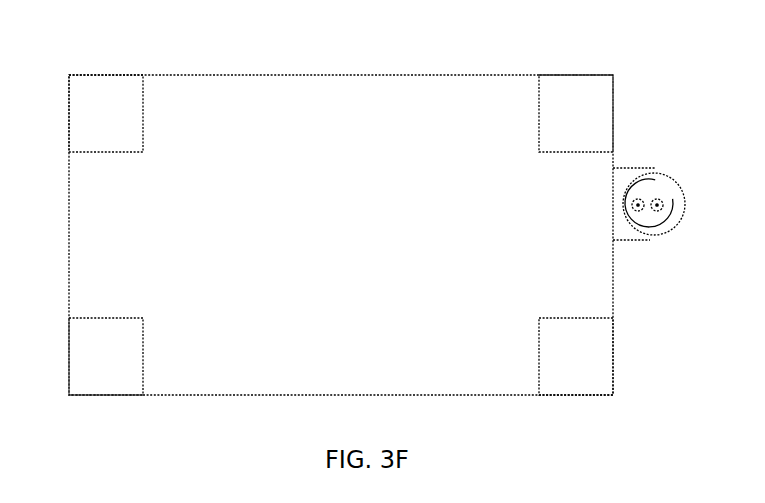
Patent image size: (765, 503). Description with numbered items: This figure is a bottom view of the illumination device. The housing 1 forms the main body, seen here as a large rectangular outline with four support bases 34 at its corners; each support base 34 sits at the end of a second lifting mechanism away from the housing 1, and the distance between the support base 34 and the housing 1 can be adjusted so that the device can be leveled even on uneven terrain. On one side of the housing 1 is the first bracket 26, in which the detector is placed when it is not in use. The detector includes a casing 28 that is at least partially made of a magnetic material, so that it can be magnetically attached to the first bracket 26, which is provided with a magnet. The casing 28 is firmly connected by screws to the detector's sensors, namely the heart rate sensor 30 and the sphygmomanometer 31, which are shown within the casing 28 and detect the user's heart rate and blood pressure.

The housing 1 is at (284, 138).
The support base 34 is at (107, 100).
The first bracket 26 is at (677, 217).
The casing 28 is at (652, 190).
The heart rate sensor 30 is at (661, 206).
The sphygmomanometer 31 is at (639, 211).